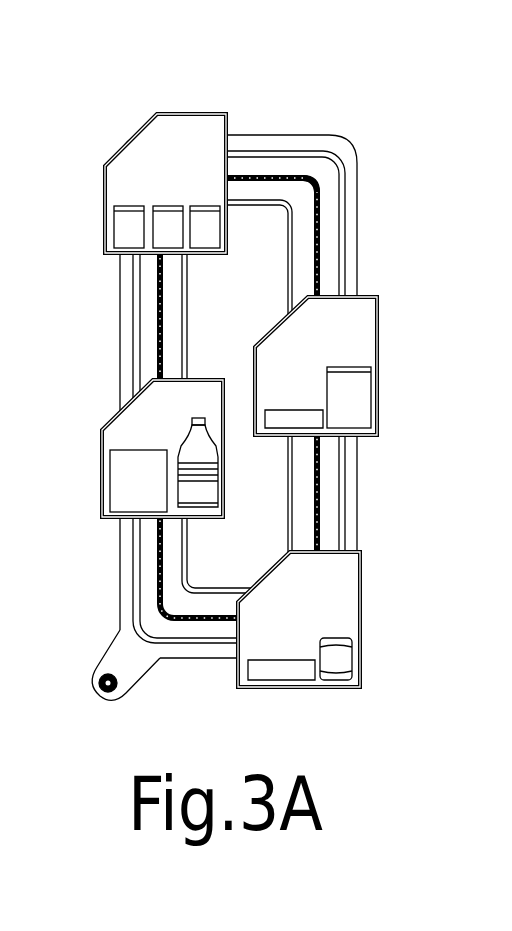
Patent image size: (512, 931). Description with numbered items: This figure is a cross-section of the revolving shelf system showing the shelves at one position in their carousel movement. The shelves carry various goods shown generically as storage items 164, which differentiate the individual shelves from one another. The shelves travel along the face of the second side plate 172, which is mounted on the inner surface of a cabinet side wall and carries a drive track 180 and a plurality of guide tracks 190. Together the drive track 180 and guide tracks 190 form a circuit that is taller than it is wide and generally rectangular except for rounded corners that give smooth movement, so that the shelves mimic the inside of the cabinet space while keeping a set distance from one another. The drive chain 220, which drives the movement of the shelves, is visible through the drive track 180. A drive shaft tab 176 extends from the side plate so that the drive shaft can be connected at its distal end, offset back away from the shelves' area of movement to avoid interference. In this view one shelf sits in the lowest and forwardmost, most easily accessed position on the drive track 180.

The storage items 164 is at (125, 232).
The second side plate 172 is at (347, 147).
The drive shaft tab 176 is at (107, 648).
The drive track 180 is at (318, 248).
The guide tracks 190 is at (342, 212).
The drive chain 220 is at (317, 184).